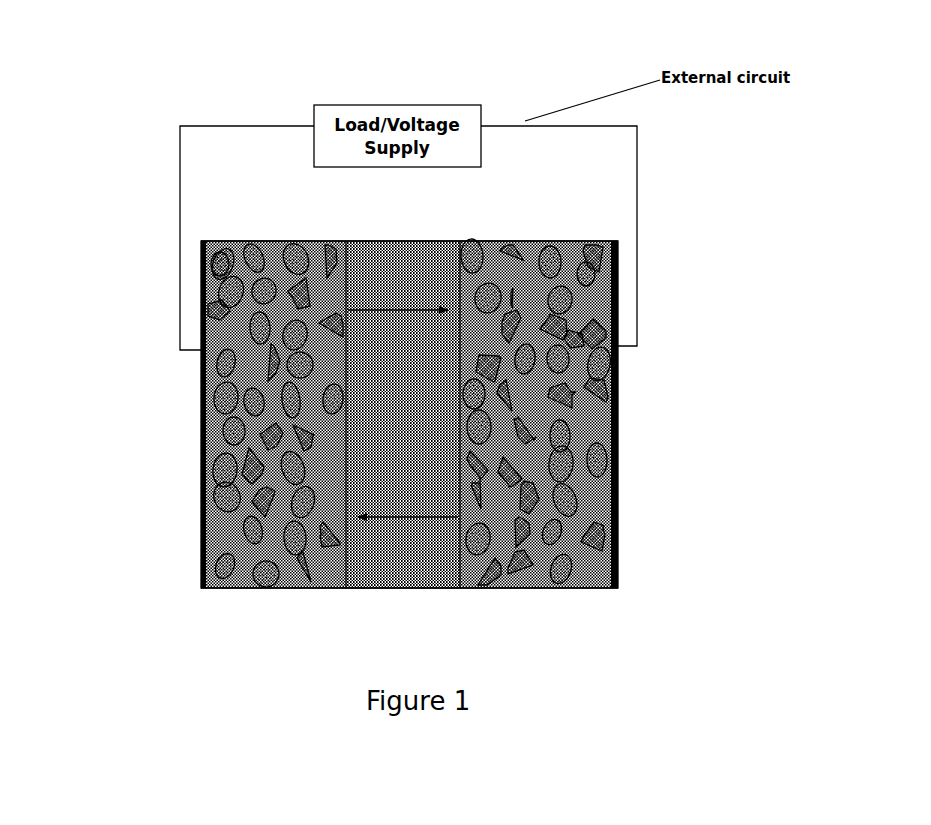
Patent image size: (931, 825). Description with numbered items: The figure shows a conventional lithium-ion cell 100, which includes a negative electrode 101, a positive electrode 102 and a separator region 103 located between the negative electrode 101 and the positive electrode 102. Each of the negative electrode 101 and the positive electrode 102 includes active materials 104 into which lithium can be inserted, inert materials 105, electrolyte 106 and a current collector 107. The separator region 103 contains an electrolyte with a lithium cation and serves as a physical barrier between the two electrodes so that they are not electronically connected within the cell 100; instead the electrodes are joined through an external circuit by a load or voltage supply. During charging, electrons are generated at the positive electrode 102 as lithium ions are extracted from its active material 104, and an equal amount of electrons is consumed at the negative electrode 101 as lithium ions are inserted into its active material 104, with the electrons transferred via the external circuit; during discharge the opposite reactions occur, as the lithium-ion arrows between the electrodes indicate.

The lithium-ion cell 100 is at (104, 53).
The negative electrode 101 is at (253, 240).
The positive electrode 102 is at (523, 240).
The separator region 103 is at (391, 236).
The active materials 104 is at (213, 253).
The inert materials 105 is at (210, 303).
The electrolyte 106 is at (195, 343).
The current collector 107 is at (197, 422).